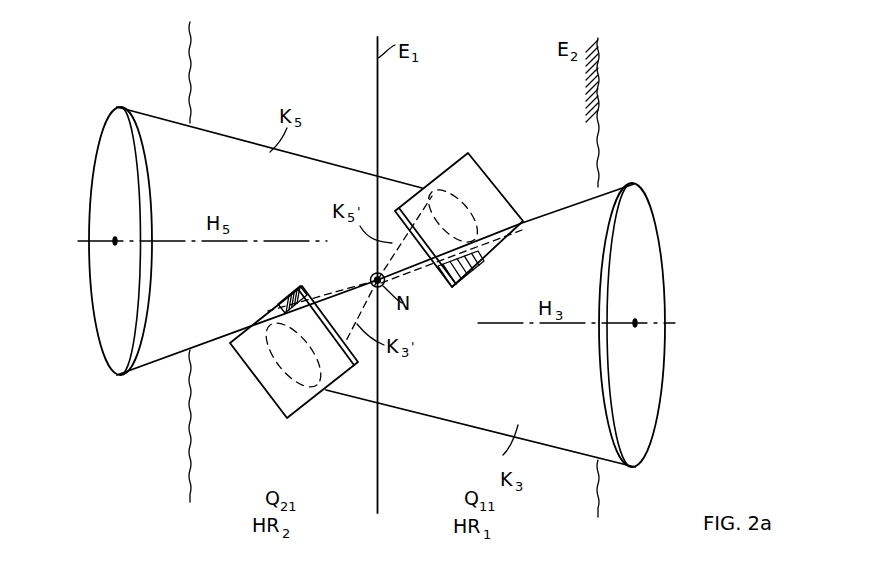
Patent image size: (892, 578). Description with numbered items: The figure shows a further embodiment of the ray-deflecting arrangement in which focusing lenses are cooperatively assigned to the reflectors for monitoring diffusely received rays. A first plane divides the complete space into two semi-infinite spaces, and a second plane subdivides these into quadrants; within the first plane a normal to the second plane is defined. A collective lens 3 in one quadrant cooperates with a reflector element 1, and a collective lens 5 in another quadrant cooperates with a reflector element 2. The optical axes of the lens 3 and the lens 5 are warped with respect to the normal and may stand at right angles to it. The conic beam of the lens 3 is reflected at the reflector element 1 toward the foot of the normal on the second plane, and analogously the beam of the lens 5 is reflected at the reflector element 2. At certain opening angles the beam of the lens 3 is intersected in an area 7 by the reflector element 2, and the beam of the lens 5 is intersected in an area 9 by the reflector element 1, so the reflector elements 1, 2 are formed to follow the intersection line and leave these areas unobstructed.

The reflector element 1 is at (263, 367).
The reflector element 2 is at (488, 193).
The collective lens 3 is at (648, 260).
The collective lens 5 is at (110, 137).
The intersected area 7 is at (466, 274).
The intersected area 9 is at (289, 300).